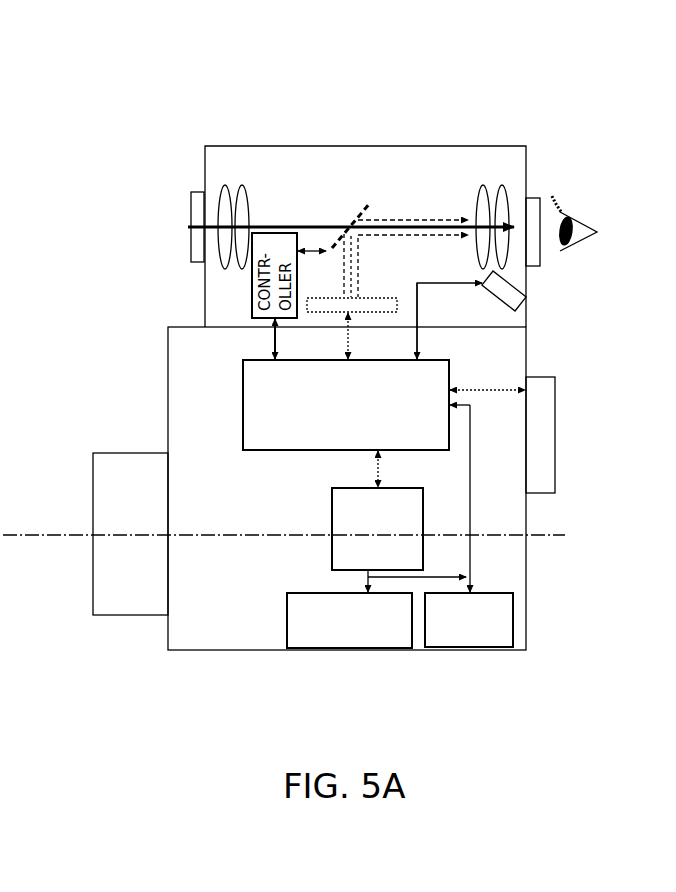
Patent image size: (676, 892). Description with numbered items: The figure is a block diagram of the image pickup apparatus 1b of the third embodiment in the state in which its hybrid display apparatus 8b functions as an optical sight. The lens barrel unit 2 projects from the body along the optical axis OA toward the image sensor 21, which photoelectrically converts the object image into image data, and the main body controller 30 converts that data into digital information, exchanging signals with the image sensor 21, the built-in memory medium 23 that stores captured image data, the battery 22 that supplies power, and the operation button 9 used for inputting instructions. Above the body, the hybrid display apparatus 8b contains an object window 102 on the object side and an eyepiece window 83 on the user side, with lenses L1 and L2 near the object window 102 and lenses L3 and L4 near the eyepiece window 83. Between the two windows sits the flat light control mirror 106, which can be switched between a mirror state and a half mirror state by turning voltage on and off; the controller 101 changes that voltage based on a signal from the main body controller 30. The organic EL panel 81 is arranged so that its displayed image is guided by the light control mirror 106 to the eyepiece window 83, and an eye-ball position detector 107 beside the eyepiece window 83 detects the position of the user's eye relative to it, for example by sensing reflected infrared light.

The image pickup apparatus 1b is at (620, 70).
The lens barrel unit 2 is at (117, 583).
The hybrid display apparatus 8b is at (421, 167).
The operation button 9 is at (544, 441).
The image sensor 21 is at (332, 553).
The battery 22 is at (512, 648).
The memory medium 23 is at (412, 647).
The main body controller 30 is at (346, 405).
The organic EL panel 81 is at (365, 312).
The eyepiece window 83 is at (542, 195).
The controller 101 is at (252, 295).
The object window 102 is at (180, 240).
The light control mirror 106 is at (360, 212).
The eye-ball position detector 107 is at (513, 297).
The lens L1 is at (214, 202).
The lens L2 is at (230, 190).
The lens L3 is at (495, 192).
The lens L4 is at (510, 185).
The optical axis OA is at (53, 537).